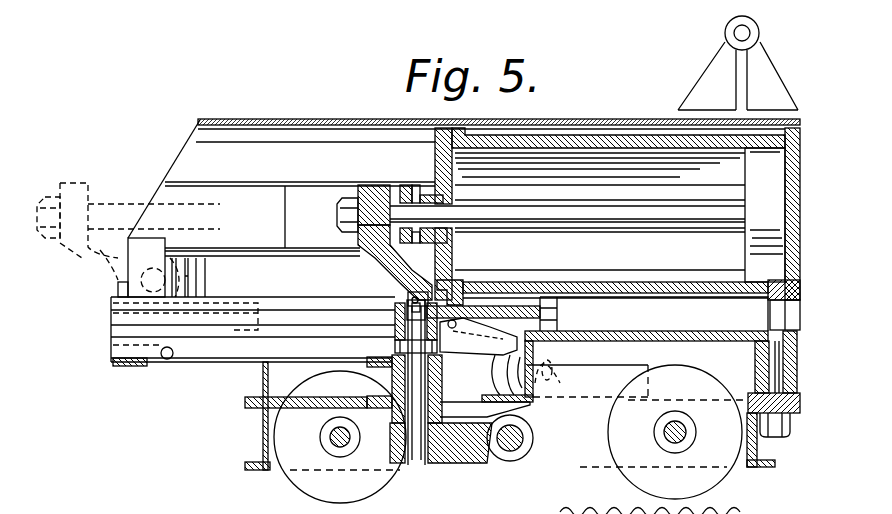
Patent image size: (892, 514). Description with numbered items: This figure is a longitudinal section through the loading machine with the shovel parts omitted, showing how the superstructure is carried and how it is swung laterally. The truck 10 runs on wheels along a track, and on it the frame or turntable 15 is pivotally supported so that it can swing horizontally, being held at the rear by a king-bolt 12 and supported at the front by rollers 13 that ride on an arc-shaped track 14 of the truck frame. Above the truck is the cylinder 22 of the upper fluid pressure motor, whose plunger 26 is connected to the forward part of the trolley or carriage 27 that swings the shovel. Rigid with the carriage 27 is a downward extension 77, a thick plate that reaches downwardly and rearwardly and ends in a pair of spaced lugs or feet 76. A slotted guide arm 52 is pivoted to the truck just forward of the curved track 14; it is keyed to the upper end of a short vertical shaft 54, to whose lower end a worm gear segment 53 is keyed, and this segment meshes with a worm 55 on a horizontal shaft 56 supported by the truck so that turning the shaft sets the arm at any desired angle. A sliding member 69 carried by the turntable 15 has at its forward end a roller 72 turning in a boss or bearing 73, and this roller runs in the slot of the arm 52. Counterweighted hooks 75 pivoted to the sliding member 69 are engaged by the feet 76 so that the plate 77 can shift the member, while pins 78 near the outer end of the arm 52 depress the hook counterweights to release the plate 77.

The truck 10 is at (270, 471).
The king-bolt 12 is at (787, 433).
The rollers 13 is at (507, 371).
The arc-shaped track 14 is at (498, 395).
The frame or turntable 15 is at (686, 330).
The cylinder 22 is at (602, 134).
The plunger 26 is at (491, 206).
The trolley or carriage 27 is at (372, 184).
The slotted guide arm 52 is at (217, 361).
The worm gear segment 53 is at (472, 458).
The short vertical shaft 54 is at (428, 470).
The worm 55 is at (516, 461).
The horizontal shaft 56 is at (524, 438).
The sliding member 69 is at (517, 304).
The roller 72 is at (395, 350).
The boss or bearing 73 is at (395, 332).
The counterweighted hooks 75 is at (506, 336).
The lugs or feet 76 is at (410, 296).
The downward extension 77 is at (387, 263).
The pins 78 is at (167, 359).